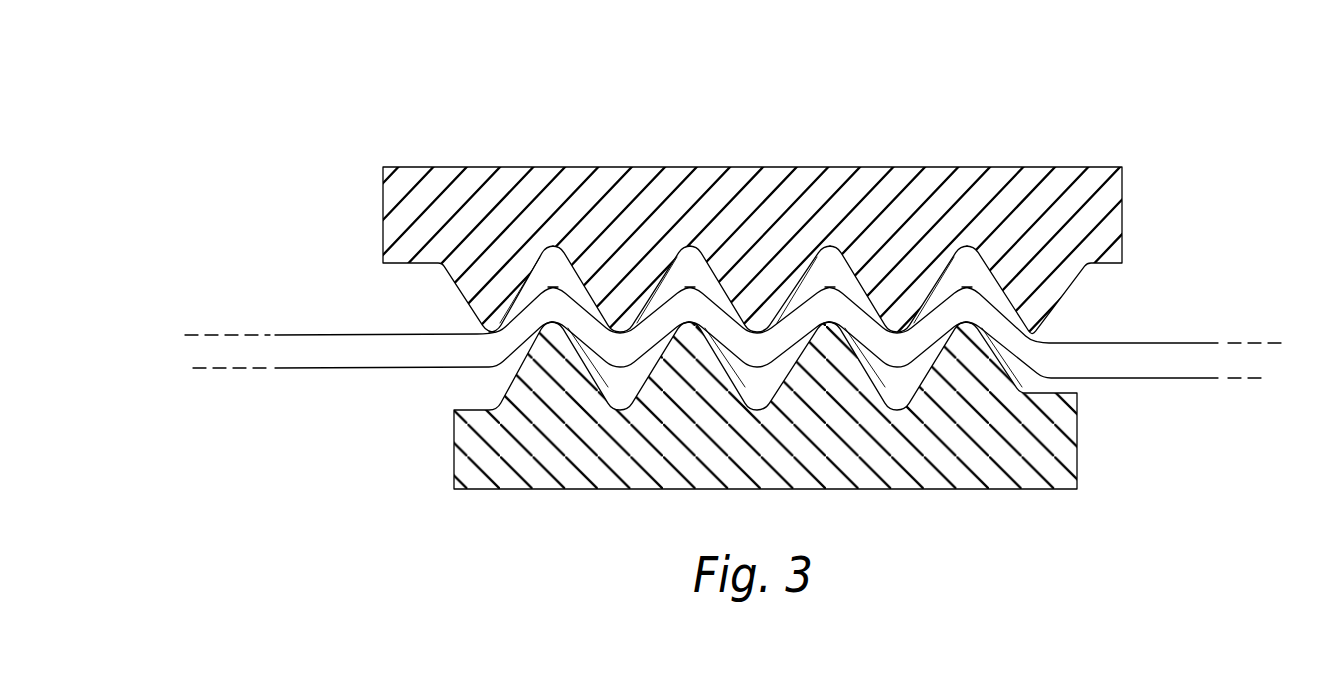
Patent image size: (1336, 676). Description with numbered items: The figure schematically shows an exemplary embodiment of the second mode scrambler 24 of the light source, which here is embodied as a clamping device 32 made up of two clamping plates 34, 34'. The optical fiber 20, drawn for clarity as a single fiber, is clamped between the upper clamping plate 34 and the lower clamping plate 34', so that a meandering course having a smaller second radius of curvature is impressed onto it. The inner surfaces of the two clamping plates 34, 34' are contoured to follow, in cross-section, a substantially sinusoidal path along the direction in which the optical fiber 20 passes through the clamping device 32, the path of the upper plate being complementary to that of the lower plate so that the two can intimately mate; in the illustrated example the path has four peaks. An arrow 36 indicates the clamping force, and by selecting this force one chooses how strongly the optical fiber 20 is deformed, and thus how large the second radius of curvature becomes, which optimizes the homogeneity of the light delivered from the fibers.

The optical fiber 20 is at (320, 358).
The second mode scrambler 24 is at (920, 120).
The clamping device 32 is at (1192, 282).
The clamping plate 34 is at (715, 252).
The clamping plate 34' is at (816, 405).
The arrow 36 is at (749, 122).